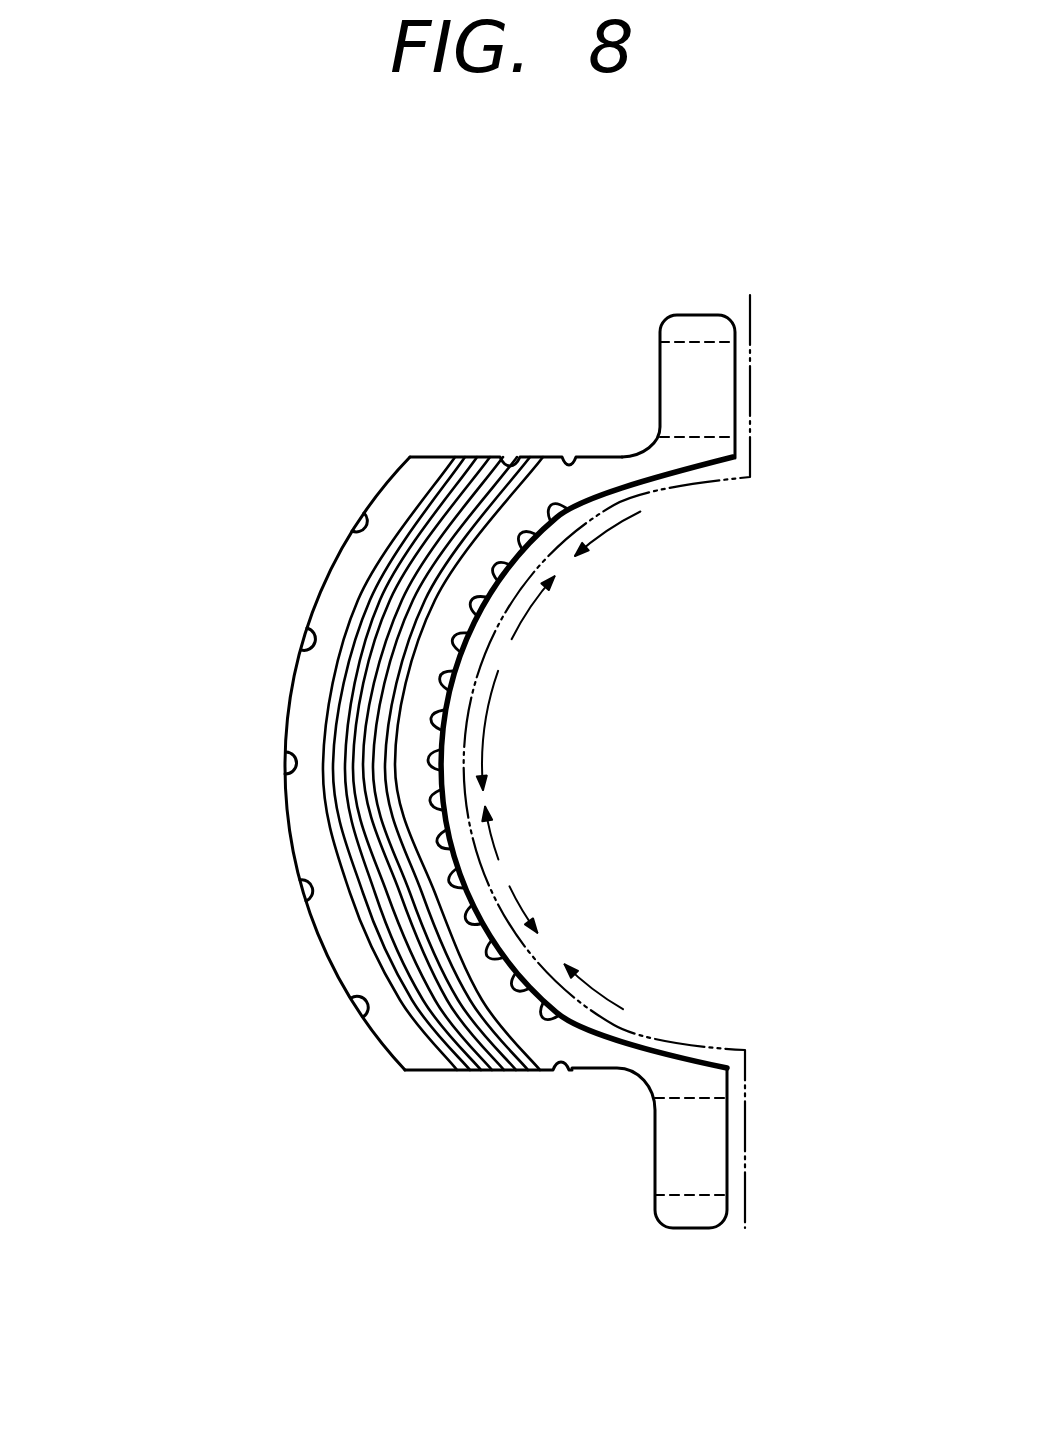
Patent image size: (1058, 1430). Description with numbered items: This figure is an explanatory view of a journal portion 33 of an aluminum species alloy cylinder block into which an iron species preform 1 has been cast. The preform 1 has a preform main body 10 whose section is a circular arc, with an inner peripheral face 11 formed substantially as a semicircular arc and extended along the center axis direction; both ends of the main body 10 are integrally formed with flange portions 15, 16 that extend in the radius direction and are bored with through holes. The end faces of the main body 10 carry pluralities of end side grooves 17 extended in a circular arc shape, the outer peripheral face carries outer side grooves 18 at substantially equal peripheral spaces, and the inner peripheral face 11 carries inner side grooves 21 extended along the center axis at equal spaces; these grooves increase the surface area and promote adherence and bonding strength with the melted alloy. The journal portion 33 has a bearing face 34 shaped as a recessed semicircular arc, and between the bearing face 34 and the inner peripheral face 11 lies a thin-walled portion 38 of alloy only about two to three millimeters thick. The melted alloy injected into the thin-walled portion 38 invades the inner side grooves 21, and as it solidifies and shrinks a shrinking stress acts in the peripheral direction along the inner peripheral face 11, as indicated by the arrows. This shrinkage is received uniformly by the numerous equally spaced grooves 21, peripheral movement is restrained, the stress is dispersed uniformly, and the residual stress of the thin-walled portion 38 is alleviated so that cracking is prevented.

The iron species preform 1 is at (395, 460).
The preform main body 10 is at (312, 603).
The inner peripheral face 11 is at (440, 778).
The flange portion 15 is at (680, 1230).
The flange portion 16 is at (697, 315).
The end side grooves 17 is at (352, 897).
The outer side grooves 18 is at (357, 528).
The inner side grooves 21 is at (557, 510).
The left side journal portion 33 is at (452, 300).
The bearing face 34 is at (464, 712).
The thin-walled portion 38 is at (510, 590).